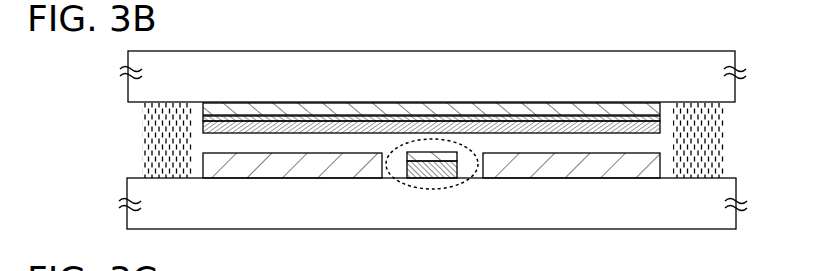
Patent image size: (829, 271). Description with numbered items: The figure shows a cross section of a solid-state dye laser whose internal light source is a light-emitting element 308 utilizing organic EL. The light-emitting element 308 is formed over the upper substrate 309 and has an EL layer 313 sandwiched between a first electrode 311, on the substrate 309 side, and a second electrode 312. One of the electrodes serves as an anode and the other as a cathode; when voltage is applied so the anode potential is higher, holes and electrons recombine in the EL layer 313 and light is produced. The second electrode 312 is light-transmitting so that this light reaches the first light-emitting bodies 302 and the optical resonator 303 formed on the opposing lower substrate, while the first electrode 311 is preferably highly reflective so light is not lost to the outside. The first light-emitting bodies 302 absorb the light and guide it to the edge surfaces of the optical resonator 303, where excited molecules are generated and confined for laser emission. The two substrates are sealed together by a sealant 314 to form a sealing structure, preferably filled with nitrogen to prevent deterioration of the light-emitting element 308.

The first light-emitting bodies 302 is at (273, 163).
The optical resonator 303 is at (420, 190).
The light-emitting element 308 is at (492, 96).
The substrate 309 is at (222, 57).
The first electrode 311 is at (343, 108).
The second electrode 312 is at (560, 126).
The EL layer 313 is at (402, 118).
The sealant 314 is at (704, 151).